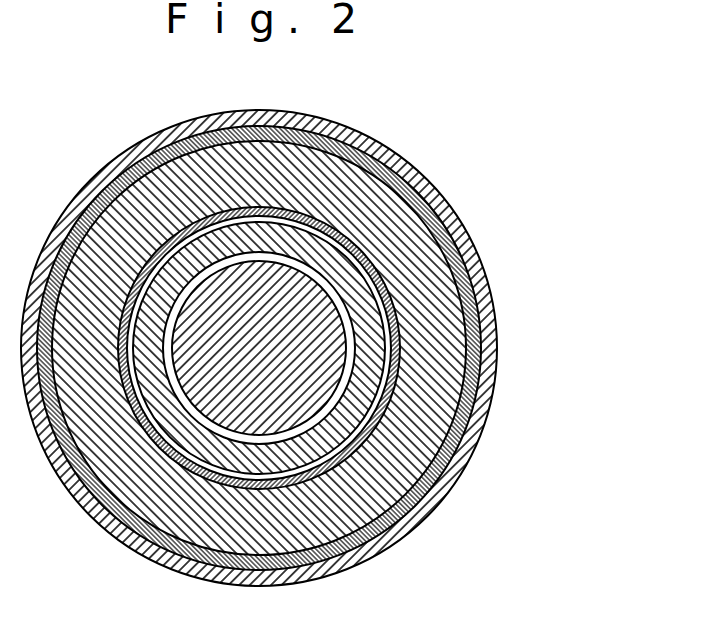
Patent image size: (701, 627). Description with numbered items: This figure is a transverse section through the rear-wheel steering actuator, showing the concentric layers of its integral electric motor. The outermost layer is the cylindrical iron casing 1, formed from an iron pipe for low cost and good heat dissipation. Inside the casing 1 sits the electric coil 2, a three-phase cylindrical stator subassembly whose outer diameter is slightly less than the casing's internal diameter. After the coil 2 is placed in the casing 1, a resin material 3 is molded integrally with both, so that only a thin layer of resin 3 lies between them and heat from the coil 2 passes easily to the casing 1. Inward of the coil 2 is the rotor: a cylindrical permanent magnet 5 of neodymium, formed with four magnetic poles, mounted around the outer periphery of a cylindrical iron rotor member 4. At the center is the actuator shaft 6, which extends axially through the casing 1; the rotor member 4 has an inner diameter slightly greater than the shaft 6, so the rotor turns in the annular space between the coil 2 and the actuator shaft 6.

The casing 1 is at (413, 170).
The electric coil 2 is at (393, 223).
The resin material 3 is at (352, 462).
The rotor member 4 is at (353, 292).
The permanent magnet 5 is at (382, 360).
The actuator shaft 6 is at (322, 330).